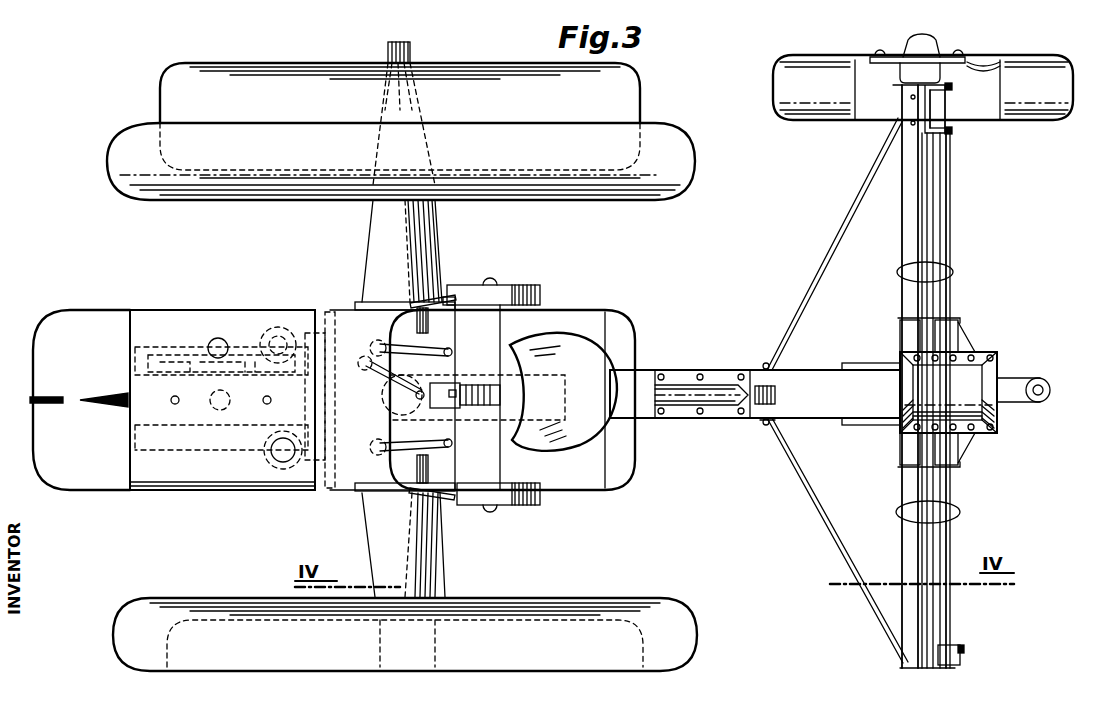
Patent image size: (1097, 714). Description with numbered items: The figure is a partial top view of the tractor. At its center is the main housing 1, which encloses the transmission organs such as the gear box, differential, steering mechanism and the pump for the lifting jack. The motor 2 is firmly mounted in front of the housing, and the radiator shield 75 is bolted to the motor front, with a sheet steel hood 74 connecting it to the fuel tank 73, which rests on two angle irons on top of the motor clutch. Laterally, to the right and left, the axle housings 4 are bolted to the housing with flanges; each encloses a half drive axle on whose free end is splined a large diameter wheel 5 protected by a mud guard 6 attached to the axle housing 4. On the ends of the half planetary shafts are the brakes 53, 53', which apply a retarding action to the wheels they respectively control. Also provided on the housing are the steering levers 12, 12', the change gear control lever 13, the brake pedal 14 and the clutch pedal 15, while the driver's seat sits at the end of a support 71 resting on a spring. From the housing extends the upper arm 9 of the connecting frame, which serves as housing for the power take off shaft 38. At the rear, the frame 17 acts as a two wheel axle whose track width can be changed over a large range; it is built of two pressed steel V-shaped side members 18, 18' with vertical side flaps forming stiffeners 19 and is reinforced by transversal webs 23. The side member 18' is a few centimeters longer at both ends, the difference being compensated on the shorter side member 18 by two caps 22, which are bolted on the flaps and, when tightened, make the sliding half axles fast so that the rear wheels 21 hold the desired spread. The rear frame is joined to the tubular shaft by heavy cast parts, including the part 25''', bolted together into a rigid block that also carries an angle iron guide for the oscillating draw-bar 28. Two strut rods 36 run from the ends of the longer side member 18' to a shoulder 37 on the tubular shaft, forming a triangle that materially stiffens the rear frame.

The main housing 1 is at (633, 340).
The motor 2 is at (207, 300).
The axle housing 4 is at (432, 213).
The wheels 5 is at (632, 92).
The mud guards 6 is at (682, 148).
The upper arm 9 is at (640, 392).
The steering lever 12 is at (486, 473).
The steering lever 12' is at (468, 327).
The change gear control lever 13 is at (507, 395).
The brake pedal 14 is at (408, 302).
The clutch pedal 15 is at (585, 433).
The frame 17 is at (955, 276).
The side member 18 is at (989, 400).
The side member 18' is at (885, 400).
The stiffeners 19 is at (910, 185).
The rear wheels 21 is at (985, 58).
The caps 22 is at (943, 118).
The transversal webs 23 is at (893, 88).
The cast part 25''' is at (990, 392).
The oscillating draw-bar 28 is at (1045, 402).
The strut rods 36 is at (822, 242).
The shoulder 37 is at (770, 434).
The power take off shaft 38 is at (762, 388).
The brake 53 is at (453, 497).
The brake 53' is at (493, 268).
The support 71 is at (625, 348).
The fuel tank 73 is at (352, 468).
The hood 74 is at (147, 318).
The radiator shield 75 is at (50, 330).